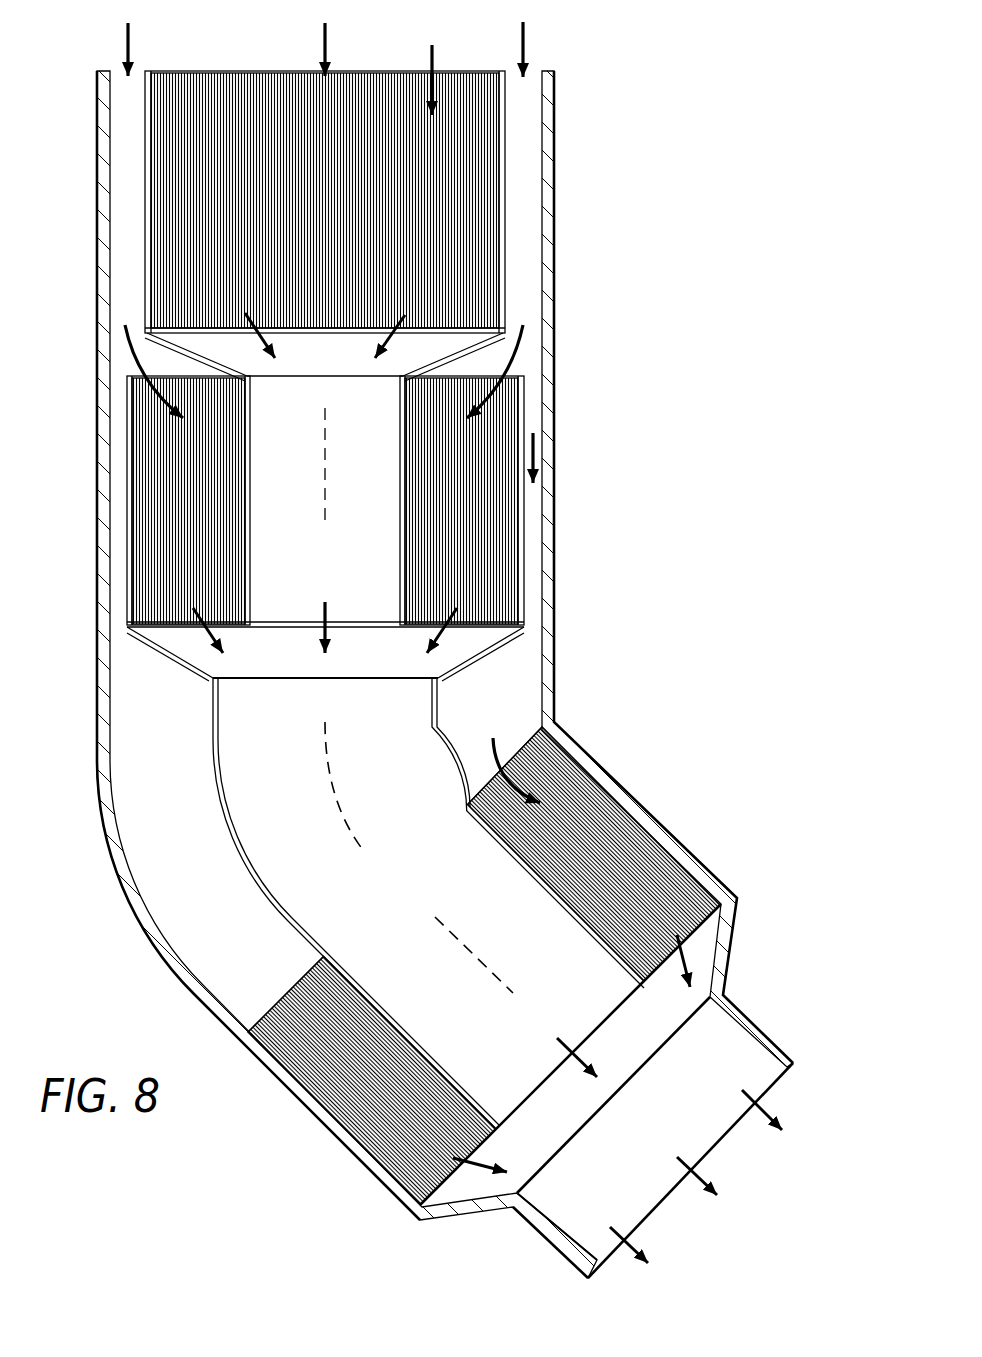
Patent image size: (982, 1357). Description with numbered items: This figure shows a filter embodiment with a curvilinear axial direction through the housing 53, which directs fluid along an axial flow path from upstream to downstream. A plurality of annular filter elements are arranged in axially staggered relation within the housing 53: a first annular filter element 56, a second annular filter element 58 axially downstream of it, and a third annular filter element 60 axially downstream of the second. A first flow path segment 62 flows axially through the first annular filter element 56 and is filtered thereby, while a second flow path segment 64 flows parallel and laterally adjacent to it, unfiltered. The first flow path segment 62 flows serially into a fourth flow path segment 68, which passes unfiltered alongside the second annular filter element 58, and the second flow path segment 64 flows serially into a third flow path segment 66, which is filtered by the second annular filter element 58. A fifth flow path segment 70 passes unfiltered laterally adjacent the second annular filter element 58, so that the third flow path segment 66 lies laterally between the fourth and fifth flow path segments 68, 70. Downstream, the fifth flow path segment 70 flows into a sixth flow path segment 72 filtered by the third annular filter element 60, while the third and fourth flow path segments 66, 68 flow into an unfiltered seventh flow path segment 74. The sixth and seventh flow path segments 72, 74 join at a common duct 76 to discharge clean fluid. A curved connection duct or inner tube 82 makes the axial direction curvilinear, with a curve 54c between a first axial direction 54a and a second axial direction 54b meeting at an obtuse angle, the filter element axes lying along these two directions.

The housing 53 is at (97, 172).
The first annular filter element 56 is at (165, 233).
The second annular filter element 58 is at (158, 525).
The third annular filter element 60 is at (345, 1102).
The sixth flow path segment 72 is at (498, 752).
The first flow path segment 62 is at (434, 60).
The second flow path segment 64 is at (526, 42).
The third flow path segment 66 is at (548, 355).
The fourth flow path segment 68 is at (327, 610).
The fifth flow path segment 70 is at (545, 455).
The seventh flow path segment 74 is at (560, 1040).
The common duct 76 is at (753, 1017).
The curved connection duct 82 is at (445, 752).
The first axial direction 54a is at (327, 480).
The second axial direction 54b is at (467, 952).
The curve 54c is at (335, 793).